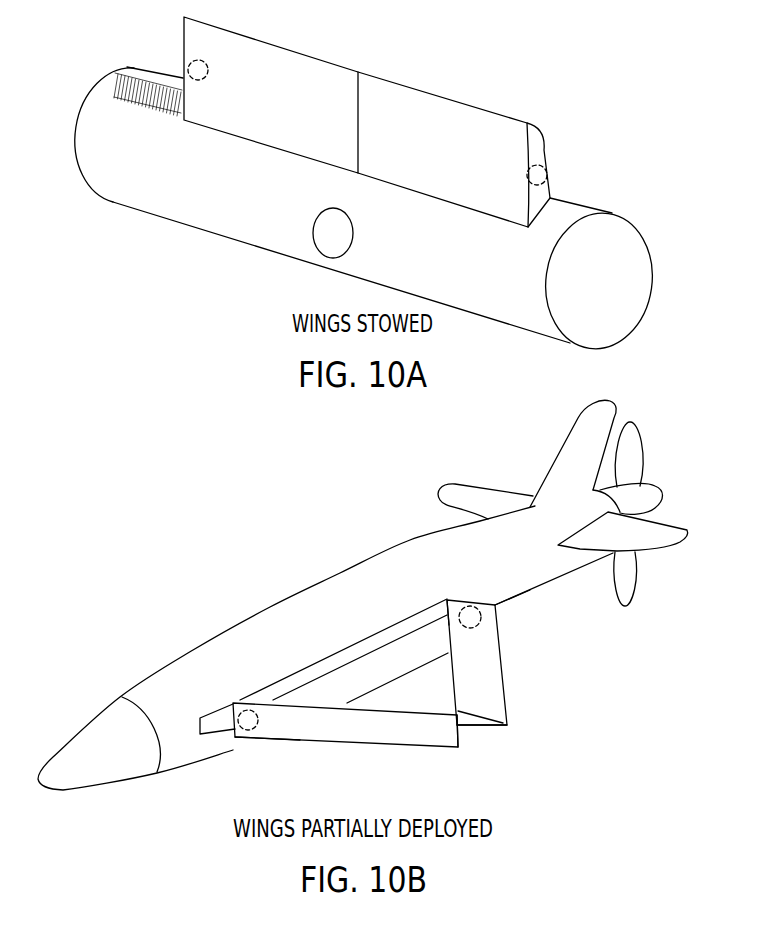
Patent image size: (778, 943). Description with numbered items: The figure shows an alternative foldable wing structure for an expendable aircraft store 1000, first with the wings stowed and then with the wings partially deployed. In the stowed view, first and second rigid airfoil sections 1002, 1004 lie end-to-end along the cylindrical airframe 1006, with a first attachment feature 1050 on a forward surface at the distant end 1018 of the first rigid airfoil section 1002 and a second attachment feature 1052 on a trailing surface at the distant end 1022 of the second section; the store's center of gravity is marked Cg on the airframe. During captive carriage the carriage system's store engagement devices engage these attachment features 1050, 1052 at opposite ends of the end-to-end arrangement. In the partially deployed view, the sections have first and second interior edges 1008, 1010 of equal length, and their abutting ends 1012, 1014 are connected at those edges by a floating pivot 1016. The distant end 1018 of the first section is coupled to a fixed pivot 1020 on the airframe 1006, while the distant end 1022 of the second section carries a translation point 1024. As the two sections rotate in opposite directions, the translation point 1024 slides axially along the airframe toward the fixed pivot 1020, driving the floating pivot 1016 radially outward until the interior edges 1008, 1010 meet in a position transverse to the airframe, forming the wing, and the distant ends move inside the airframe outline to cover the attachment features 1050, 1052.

In FIG. 10B, the expendable aircraft store 1000 is at (296, 543).
In FIG. 10A, the first rigid airfoil section 1002 is at (445, 97).
In FIG. 10B, the first rigid airfoil section 1002 is at (375, 745).
In FIG. 10A, the second rigid airfoil section 1004 is at (273, 44).
In FIG. 10B, the second rigid airfoil section 1004 is at (503, 670).
In FIG. 10A, the airframe 1006 is at (160, 199).
In FIG. 10B, the first interior edge 1008 is at (323, 702).
In FIG. 10B, the second interior edge 1010 is at (447, 650).
In FIG. 10B, the abutting end 1012 is at (458, 738).
In FIG. 10B, the abutting end 1014 is at (480, 727).
In FIG. 10B, the floating pivot 1016 is at (457, 710).
In FIG. 10B, the distant end 1018 is at (272, 740).
In FIG. 10B, the fixed pivot 1020 is at (238, 700).
In FIG. 10B, the distant end 1022 is at (498, 612).
In FIG. 10B, the translation point 1024 is at (448, 610).
In FIG. 10A, the first attachment feature 1050 is at (188, 63).
In FIG. 10B, the first attachment feature 1050 is at (240, 730).
In FIG. 10A, the second attachment feature 1052 is at (548, 174).
In FIG. 10B, the second attachment feature 1052 is at (470, 604).
In FIG. 10A, the center of gravity Cg is at (316, 244).